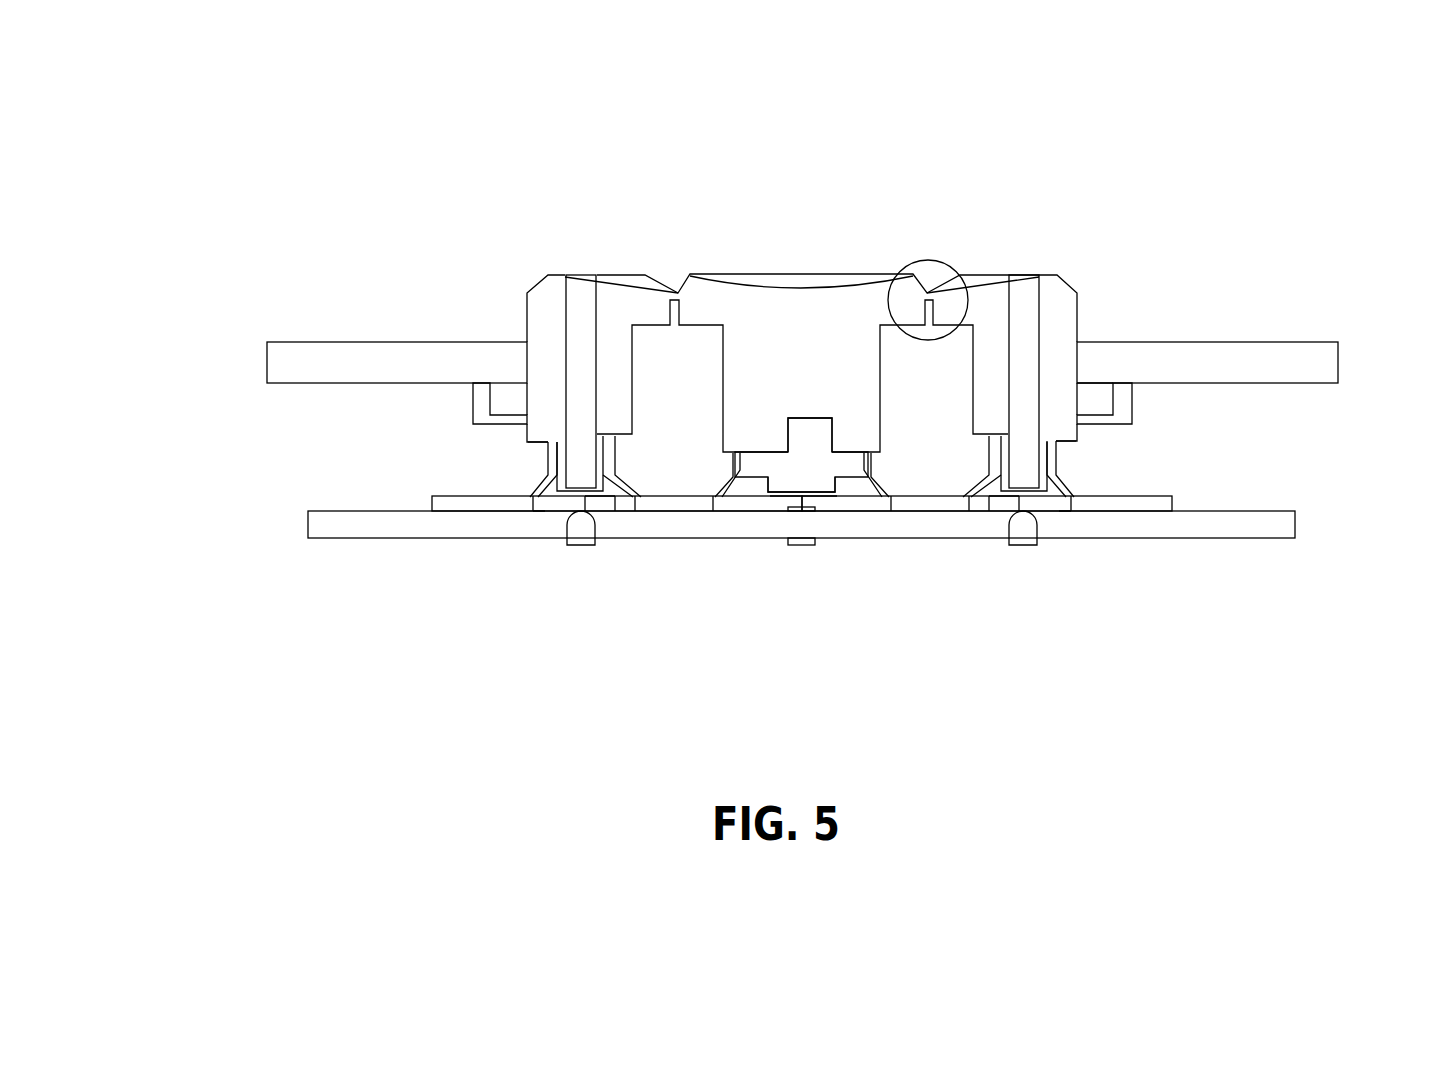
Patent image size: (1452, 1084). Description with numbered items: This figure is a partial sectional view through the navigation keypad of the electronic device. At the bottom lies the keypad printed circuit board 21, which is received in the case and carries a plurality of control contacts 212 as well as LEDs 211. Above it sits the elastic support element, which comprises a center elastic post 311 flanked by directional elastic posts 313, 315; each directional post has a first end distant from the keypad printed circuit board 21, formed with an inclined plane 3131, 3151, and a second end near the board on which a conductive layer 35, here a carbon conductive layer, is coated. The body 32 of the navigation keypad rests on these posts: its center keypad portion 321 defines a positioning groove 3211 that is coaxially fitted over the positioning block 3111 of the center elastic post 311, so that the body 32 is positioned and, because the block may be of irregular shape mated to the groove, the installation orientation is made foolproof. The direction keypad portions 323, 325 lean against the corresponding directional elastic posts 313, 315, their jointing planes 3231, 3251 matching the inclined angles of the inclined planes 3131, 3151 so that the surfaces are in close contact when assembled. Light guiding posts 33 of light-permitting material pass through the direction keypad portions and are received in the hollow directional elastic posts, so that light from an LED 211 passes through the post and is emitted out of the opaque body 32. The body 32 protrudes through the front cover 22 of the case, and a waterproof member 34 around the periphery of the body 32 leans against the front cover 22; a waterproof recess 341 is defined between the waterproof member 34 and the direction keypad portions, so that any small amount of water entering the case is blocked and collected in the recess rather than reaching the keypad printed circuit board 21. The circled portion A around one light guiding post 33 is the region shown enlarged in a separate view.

The keypad printed circuit board 21 is at (1205, 530).
The LED 211 is at (583, 545).
The control contact 212 is at (542, 512).
The front cover 22 is at (266, 336).
The body 32 is at (742, 313).
The center keypad portion 321 is at (790, 310).
The positioning groove 3211 is at (803, 437).
The direction keypad portion 323 is at (1060, 308).
The jointing plane 3231 is at (1047, 430).
The direction keypad portion 325 is at (540, 305).
The jointing plane 3251 is at (535, 445).
The light guiding post 33 is at (578, 275).
The waterproof member 34 is at (1132, 390).
The waterproof recess 341 is at (1090, 417).
The center elastic post 311 is at (837, 468).
The positioning block 3111 is at (714, 498).
The directional elastic post 313 is at (1070, 487).
The inclined plane 3131 is at (1047, 428).
The directional elastic post 315 is at (537, 490).
The inclined plane 3151 is at (552, 438).
The conductive layer 35 is at (593, 497).
The portion A is at (920, 262).